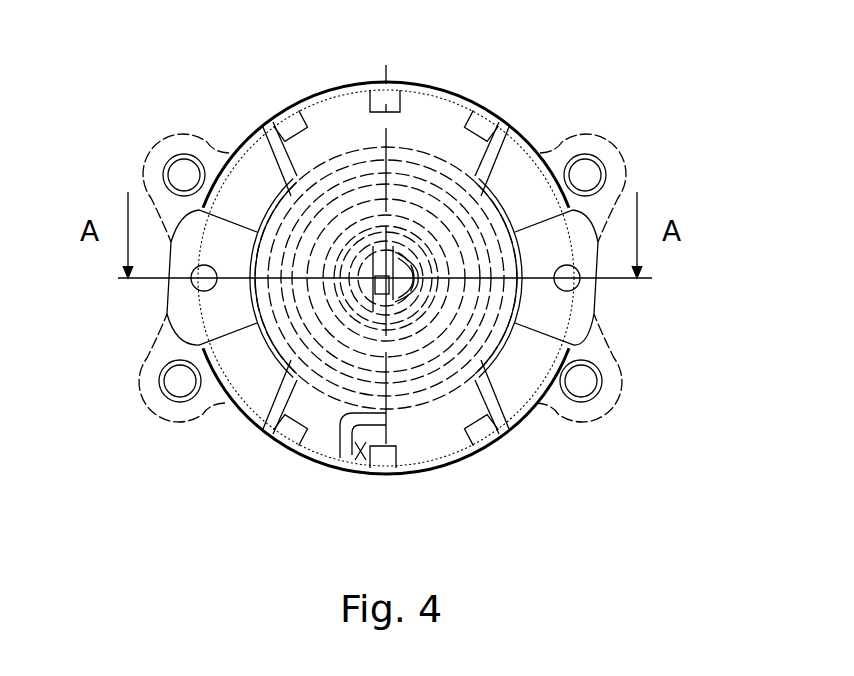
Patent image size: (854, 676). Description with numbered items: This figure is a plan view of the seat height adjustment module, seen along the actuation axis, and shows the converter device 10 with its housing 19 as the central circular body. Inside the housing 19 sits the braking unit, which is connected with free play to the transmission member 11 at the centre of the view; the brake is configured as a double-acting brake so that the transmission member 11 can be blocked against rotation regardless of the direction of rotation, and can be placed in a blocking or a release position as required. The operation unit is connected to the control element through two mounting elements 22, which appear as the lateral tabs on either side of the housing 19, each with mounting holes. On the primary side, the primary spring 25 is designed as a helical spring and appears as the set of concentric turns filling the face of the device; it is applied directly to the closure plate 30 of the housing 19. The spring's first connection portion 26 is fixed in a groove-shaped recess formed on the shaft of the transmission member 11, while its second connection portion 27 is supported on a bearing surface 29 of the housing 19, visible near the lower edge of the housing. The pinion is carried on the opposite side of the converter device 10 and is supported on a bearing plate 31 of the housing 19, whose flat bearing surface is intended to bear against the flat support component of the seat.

The converter device 10 is at (603, 82).
The transmission member 11 is at (404, 296).
The housing 19 is at (520, 128).
The mounting elements 22 is at (180, 316).
The primary spring 25 is at (346, 138).
The first connection portion 26 is at (374, 268).
The second connection portion 27 is at (330, 450).
The bearing surface 29 is at (370, 458).
The closure plate 30 is at (422, 126).
The bearing plate 31 is at (188, 416).